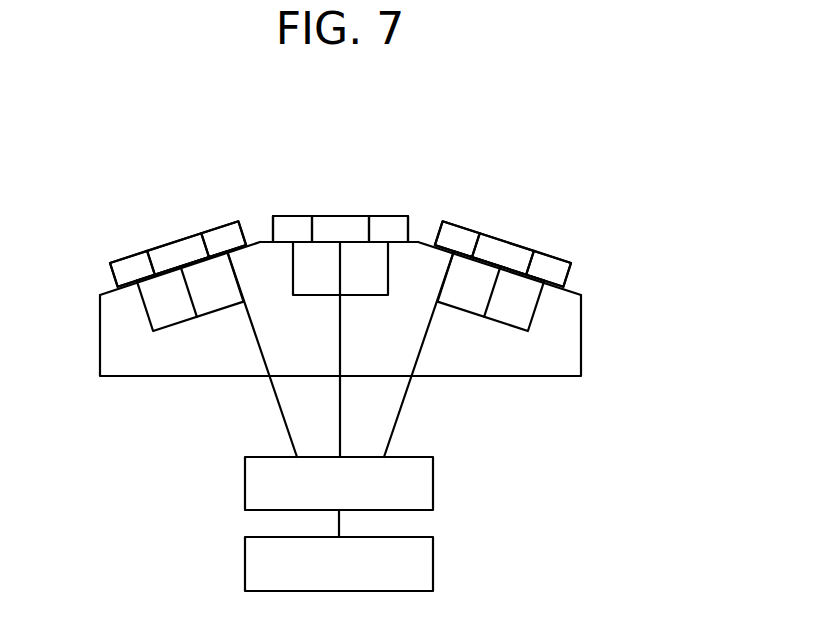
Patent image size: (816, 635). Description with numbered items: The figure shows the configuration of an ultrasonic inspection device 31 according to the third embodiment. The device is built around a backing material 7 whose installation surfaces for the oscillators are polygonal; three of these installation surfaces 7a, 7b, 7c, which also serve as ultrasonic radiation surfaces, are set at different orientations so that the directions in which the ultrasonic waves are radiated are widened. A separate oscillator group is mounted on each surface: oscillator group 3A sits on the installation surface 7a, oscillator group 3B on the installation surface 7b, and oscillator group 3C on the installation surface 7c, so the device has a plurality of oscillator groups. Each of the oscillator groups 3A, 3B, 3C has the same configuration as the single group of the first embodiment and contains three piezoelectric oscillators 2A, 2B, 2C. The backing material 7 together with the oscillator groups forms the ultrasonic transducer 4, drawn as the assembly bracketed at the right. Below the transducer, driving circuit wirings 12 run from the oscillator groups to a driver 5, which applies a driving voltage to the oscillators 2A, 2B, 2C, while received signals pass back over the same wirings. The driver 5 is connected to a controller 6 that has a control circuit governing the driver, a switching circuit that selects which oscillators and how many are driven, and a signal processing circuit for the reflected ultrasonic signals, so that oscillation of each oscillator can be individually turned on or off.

The ultrasonic inspection device 31 is at (587, 148).
The oscillator 2A is at (128, 272).
The oscillator 2B is at (173, 253).
The oscillator 2C is at (220, 242).
The oscillator group 3A is at (113, 161).
The oscillator group 3B is at (280, 161).
The oscillator group 3C is at (568, 161).
The ultrasonic transducer 4 is at (632, 213).
The driver 5 is at (433, 485).
The controller 6 is at (433, 563).
The backing material 7 is at (100, 328).
The installation surface 7a is at (109, 291).
The installation surface 7b is at (420, 241).
The installation surface 7c is at (576, 293).
The driving circuit wiring 12 is at (398, 412).